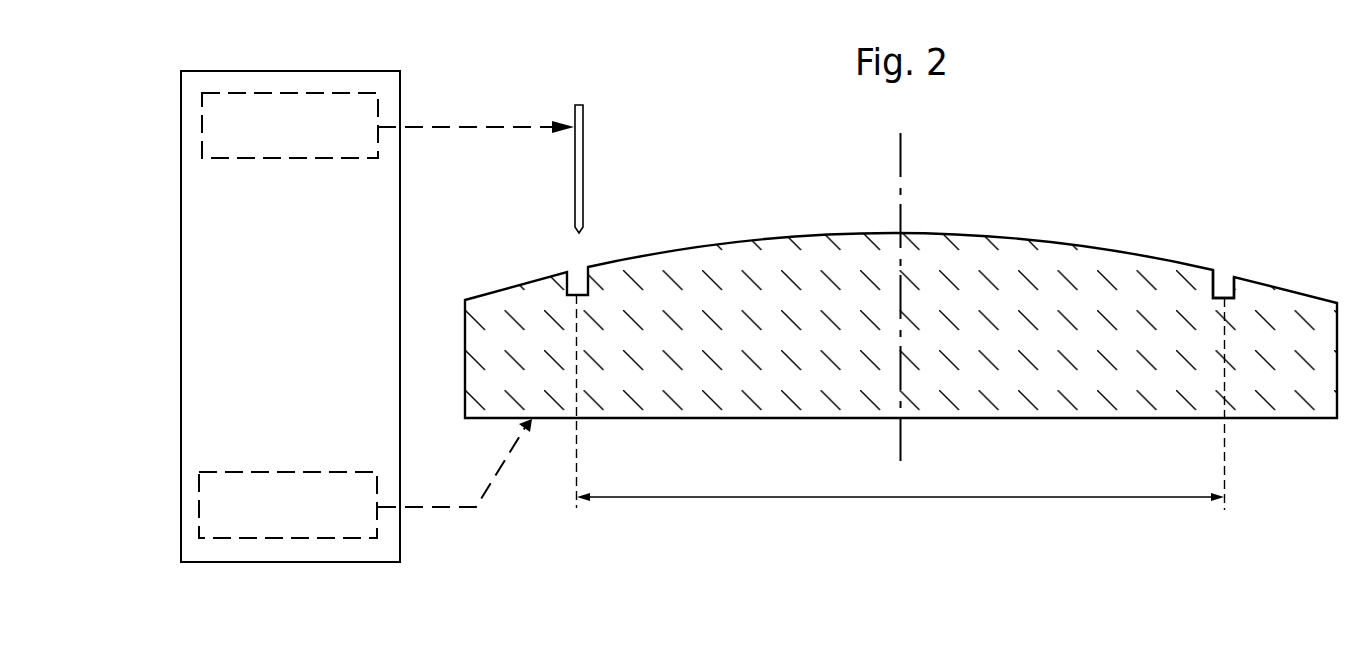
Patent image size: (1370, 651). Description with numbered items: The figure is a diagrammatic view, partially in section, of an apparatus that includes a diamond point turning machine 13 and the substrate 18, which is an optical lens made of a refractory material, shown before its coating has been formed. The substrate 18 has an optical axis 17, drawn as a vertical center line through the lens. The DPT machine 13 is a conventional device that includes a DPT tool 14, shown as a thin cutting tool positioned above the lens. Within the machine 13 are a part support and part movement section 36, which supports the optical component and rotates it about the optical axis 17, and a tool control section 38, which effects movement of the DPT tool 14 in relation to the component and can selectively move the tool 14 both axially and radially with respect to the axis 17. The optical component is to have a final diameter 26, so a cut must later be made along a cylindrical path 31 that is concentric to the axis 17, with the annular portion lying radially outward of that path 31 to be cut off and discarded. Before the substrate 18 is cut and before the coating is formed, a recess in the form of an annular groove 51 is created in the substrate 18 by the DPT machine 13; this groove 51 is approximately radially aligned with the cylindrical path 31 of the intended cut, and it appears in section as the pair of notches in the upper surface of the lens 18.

The diamond point turning machine 13 is at (302, 364).
The DPT tool 14 is at (583, 118).
The optical axis 17 is at (901, 450).
The substrate 18 is at (1077, 354).
The final diameter 26 is at (1017, 498).
The cylindrical path 31 is at (576, 475).
The part support and part movement section 36 is at (262, 471).
The tool control section 38 is at (265, 159).
The annular groove 51 is at (1228, 292).